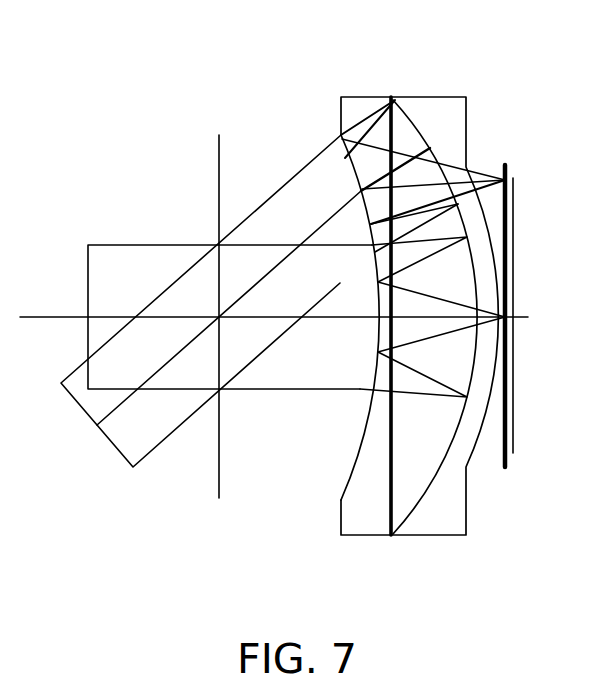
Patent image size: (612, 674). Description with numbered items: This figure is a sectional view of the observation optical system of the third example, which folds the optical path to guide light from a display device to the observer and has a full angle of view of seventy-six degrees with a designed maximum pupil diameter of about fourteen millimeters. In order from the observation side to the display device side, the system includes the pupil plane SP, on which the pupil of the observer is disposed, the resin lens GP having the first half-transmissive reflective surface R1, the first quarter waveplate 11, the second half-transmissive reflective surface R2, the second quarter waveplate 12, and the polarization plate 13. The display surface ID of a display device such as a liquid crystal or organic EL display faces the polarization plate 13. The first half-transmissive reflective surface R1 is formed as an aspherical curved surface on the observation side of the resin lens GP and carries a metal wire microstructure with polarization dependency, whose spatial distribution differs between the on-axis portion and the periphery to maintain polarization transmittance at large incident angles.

The first quarter waveplate 11 is at (391, 537).
The second quarter waveplate 12 is at (505, 468).
The polarization plate 13 is at (513, 468).
The first half-transmissive reflective surface R1 is at (342, 498).
The second half-transmissive reflective surface R2 is at (402, 522).
The pupil plane SP is at (219, 130).
The resin lens GP is at (384, 316).
The display surface ID is at (524, 322).